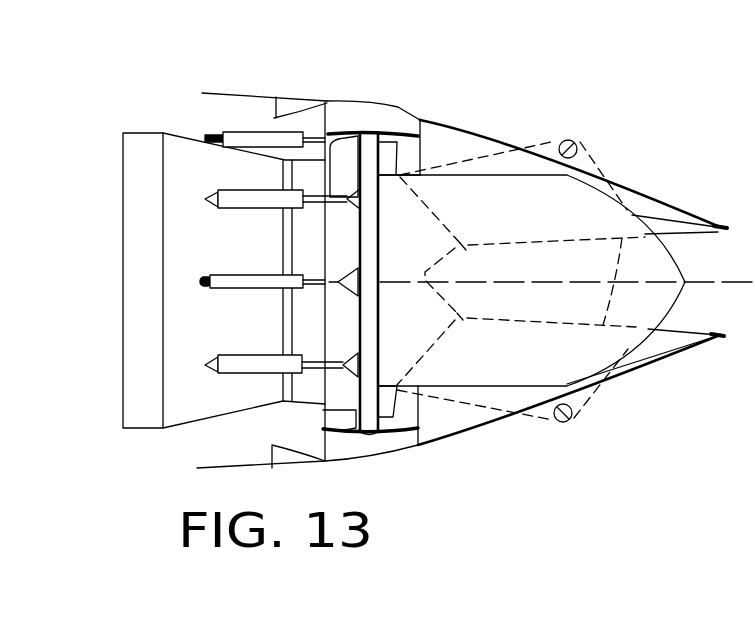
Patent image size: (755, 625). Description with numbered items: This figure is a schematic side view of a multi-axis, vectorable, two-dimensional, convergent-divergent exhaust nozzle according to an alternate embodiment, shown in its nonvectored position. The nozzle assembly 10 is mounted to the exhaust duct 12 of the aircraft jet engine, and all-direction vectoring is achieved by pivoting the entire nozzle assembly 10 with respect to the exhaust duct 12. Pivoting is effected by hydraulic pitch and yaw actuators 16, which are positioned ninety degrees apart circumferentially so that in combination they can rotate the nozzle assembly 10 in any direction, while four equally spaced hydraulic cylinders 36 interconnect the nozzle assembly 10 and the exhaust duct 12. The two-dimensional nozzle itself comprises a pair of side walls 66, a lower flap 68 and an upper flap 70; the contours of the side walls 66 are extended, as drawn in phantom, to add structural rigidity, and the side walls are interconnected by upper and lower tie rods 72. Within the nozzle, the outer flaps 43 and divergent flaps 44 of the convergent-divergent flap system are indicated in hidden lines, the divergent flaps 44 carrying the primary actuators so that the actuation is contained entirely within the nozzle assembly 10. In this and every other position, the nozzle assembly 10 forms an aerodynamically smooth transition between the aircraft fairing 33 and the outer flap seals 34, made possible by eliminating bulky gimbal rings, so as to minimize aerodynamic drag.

The exhaust nozzle assembly 10 is at (600, 135).
The exhaust duct 12 is at (138, 140).
The pitch and yaw actuators 16 is at (242, 137).
The aircraft fairing 33 is at (243, 93).
The outer flap seals 34 is at (399, 107).
The hydraulic cylinders 36 is at (250, 208).
The outer flaps 43 is at (427, 281).
The divergent flaps 44 is at (612, 262).
The side walls 66 is at (662, 300).
The lower flap 68 is at (673, 350).
The upper flap 70 is at (675, 218).
The tie rods 72 is at (567, 138).